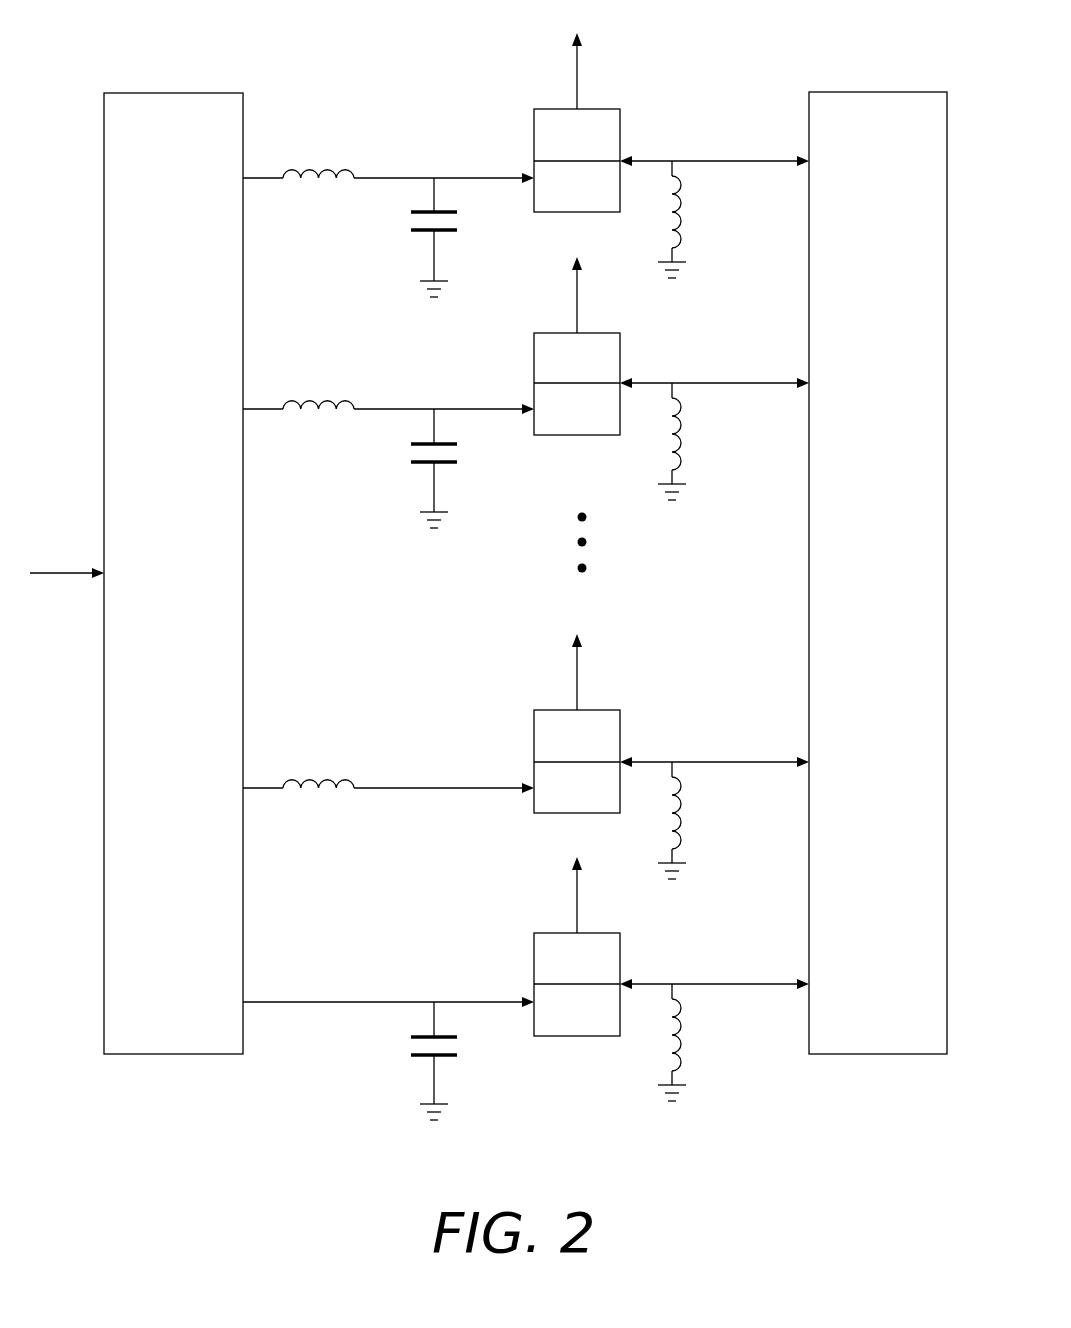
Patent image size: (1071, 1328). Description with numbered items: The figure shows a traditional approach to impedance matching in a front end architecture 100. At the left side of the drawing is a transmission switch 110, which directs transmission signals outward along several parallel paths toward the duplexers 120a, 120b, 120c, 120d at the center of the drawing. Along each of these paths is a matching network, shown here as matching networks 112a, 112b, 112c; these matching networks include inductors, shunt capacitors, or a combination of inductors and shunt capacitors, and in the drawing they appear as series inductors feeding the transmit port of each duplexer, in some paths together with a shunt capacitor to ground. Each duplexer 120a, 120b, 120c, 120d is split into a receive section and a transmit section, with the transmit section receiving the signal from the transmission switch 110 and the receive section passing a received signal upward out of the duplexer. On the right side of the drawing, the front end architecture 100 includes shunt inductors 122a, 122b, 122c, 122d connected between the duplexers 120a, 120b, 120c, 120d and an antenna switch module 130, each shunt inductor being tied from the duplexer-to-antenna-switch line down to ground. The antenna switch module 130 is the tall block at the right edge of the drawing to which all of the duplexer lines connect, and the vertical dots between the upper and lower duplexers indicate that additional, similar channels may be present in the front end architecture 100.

The front end architecture 100 is at (266, 48).
The transmission switch 110 is at (160, 93).
The matching network 112a is at (356, 241).
The matching network 112b is at (357, 479).
The matching network 112c is at (330, 749).
The duplexer 120a is at (547, 109).
The duplexer 120b is at (547, 333).
The duplexer 120c is at (547, 710).
The duplexer 120d is at (547, 933).
The shunt inductor 122a is at (679, 212).
The shunt inductor 122b is at (679, 434).
The shunt inductor 122c is at (679, 813).
The shunt inductor 122d is at (679, 1035).
The antenna switch module 130 is at (873, 92).